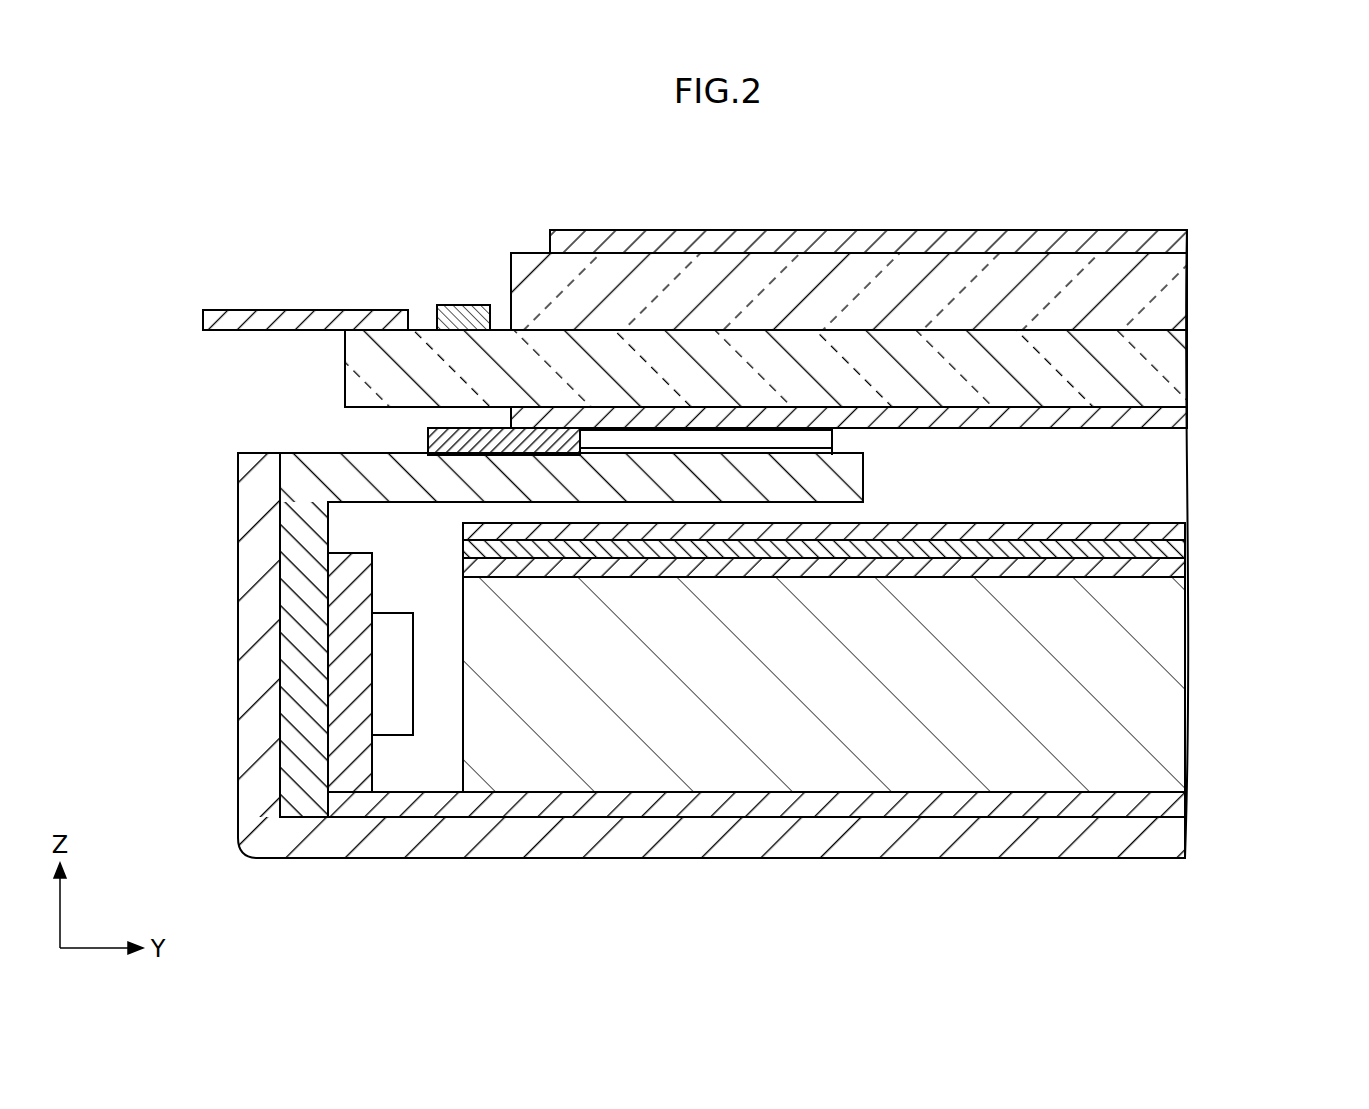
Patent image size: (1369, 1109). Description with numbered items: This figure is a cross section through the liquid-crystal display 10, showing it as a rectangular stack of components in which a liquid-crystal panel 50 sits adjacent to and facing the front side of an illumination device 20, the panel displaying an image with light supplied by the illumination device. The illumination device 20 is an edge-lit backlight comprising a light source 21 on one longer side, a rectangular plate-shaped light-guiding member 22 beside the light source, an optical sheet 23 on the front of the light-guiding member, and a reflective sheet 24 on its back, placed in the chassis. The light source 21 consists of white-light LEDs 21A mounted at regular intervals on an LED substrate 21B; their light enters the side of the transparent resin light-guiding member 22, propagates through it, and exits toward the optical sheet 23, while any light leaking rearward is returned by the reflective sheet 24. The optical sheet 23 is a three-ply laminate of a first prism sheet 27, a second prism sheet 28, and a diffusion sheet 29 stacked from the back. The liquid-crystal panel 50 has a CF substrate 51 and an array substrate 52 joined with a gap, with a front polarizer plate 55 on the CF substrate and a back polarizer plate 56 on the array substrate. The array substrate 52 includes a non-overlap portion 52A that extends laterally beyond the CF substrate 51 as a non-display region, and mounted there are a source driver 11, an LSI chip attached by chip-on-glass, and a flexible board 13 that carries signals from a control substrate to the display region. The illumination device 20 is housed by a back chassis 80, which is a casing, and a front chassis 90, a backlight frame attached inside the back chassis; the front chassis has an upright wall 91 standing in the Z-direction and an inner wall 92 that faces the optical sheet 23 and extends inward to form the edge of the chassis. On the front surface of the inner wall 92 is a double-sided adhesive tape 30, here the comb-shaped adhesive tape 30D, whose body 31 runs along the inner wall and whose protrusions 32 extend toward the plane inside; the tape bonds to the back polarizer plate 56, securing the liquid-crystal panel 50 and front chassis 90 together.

The liquid-crystal display 10 is at (1181, 154).
The source driver 11 is at (468, 323).
The flexible board 13 is at (281, 318).
The illumination device 20 is at (840, 740).
The light source 21 is at (423, 796).
The LED 21A is at (402, 712).
The LED substrate 21B is at (358, 765).
The light-guiding member 22 is at (1163, 683).
The optical sheet 23 is at (882, 550).
The reflective sheet 24 is at (790, 786).
The first prism sheet 27 is at (858, 577).
The second prism sheet 28 is at (1163, 551).
The diffusion sheet 29 is at (1163, 533).
The adhesive tape 30 is at (630, 284).
The adhesive tape 30D is at (602, 160).
The body 31 is at (545, 443).
The protrusion 32 is at (652, 442).
The liquid-crystal panel 50 is at (826, 328).
The CF substrate 51 is at (1163, 298).
The array substrate 52 is at (1163, 372).
The non-overlap portion 52A is at (425, 367).
The front polarizer plate 55 is at (1163, 248).
The back polarizer plate 56 is at (882, 420).
The back chassis 80 is at (315, 848).
The front chassis 90 is at (485, 635).
The upright wall 91 is at (300, 617).
The inner wall 92 is at (500, 482).